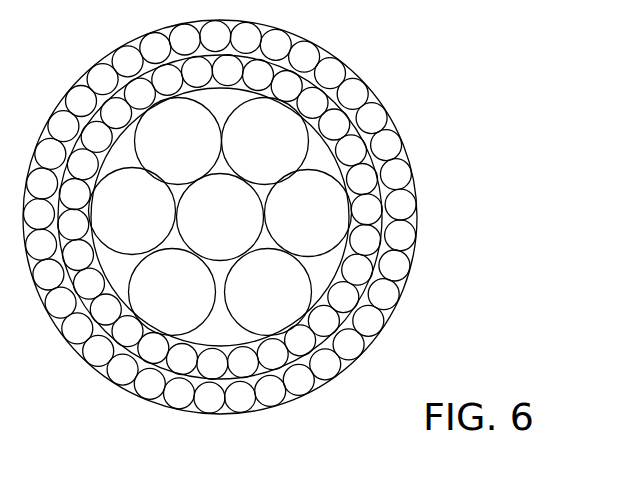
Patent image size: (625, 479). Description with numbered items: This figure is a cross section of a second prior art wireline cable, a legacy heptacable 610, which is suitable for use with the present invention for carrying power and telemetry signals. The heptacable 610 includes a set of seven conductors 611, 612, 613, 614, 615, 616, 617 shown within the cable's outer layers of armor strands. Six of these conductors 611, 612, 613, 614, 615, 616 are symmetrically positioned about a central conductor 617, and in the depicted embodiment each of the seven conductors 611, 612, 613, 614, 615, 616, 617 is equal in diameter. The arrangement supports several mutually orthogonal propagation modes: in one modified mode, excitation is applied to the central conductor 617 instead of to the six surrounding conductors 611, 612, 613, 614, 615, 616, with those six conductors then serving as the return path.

The heptacable 610 is at (349, 72).
The conductor 611 is at (161, 154).
The conductor 612 is at (247, 154).
The conductor 613 is at (290, 226).
The conductor 614 is at (251, 304).
The conductor 615 is at (156, 304).
The conductor 616 is at (113, 226).
The central conductor 617 is at (203, 228).